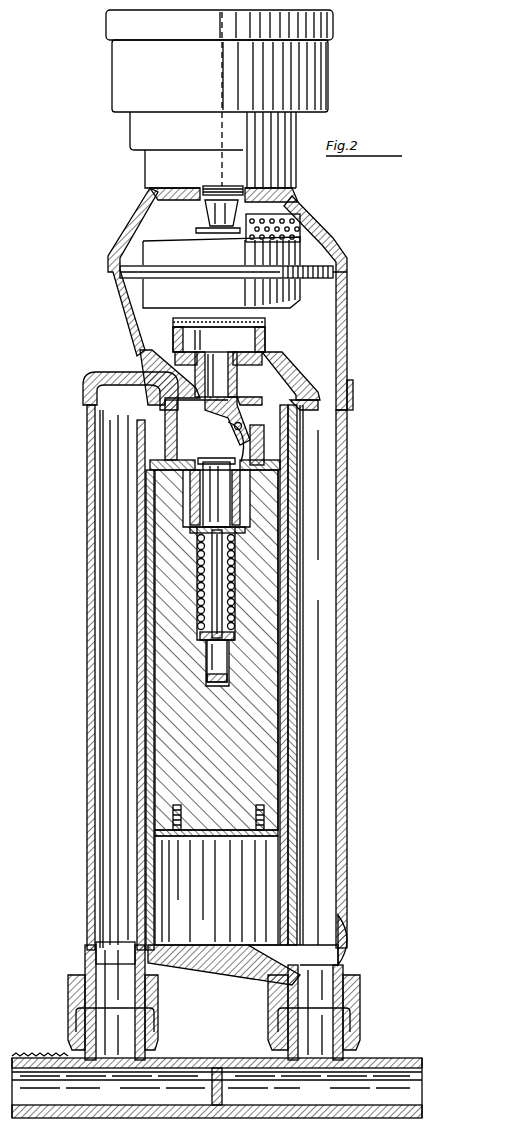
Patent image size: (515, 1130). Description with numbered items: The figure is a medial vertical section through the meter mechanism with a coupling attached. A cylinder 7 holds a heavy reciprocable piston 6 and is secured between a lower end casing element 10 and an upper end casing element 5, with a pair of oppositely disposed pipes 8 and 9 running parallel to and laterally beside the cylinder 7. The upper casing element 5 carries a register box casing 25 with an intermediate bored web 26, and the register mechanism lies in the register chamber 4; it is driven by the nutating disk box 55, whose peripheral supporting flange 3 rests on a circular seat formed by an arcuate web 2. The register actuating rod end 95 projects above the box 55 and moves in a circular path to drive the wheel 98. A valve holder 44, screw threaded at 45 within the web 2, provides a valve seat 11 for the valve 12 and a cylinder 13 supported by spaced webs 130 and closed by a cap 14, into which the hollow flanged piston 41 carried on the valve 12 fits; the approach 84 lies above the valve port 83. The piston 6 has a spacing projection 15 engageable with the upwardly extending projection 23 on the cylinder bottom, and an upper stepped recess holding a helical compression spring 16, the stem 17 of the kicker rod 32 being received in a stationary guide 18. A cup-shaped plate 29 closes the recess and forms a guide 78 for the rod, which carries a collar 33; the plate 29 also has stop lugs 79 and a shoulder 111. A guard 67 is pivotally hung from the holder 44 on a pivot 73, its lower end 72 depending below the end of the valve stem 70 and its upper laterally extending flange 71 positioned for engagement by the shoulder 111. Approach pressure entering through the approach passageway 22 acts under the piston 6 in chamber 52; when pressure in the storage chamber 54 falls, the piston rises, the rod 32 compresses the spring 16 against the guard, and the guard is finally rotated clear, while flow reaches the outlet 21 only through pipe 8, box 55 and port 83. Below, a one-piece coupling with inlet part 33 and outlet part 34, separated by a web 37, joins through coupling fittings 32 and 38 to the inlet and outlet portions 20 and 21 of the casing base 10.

The arcuate web 2 is at (308, 326).
The peripheral supporting flange 3 is at (135, 280).
The register chamber 4 is at (168, 62).
The upper end casing element 5 is at (349, 388).
The piston 6 is at (216, 650).
The cylinder 7 is at (275, 662).
The pipe 8 is at (342, 703).
The pipe 9 is at (88, 692).
The lower end casing element 10 is at (354, 962).
The valve seat 11 is at (240, 410).
The valve 12 is at (222, 395).
The cylinder 13 is at (178, 326).
The cap 14 is at (178, 322).
The spacing projection 15 is at (232, 838).
The helical compression spring 16 is at (237, 560).
The stem 17 is at (222, 606).
The stationary guide 18 is at (228, 621).
The inlet portion 20 is at (340, 991).
The outlet portion 21 is at (118, 951).
The approach passageway 22 is at (292, 956).
The upwardly extending projection 23 is at (224, 946).
The register box casing 25 is at (138, 131).
The bored web 26 is at (148, 194).
The cup-shaped plate 29 is at (219, 497).
The kicker rod 32 is at (226, 497).
The collar 33 is at (200, 531).
The outlet part 34 is at (12, 1058).
The web 37 is at (223, 1098).
The coupling fitting 38 is at (158, 1010).
The hollow flanged piston 41 is at (238, 350).
The valve holder 44 is at (255, 396).
The screw thread 45 is at (300, 375).
The chamber 52 is at (238, 880).
The storage chamber 54 is at (196, 430).
The nutating disk box 55 is at (160, 260).
The guard 67 is at (241, 446).
The valve stem 70 is at (205, 443).
The upper laterally extending flange 71 is at (247, 434).
The lower end of guard 72 is at (205, 463).
The pivot 73 is at (241, 425).
The guide 78 is at (196, 510).
The stop lugs 79 is at (278, 452).
The valve port 83 is at (225, 423).
The approach 84 is at (282, 350).
The register actuating rod end 95 is at (241, 227).
The wheel 98 is at (212, 231).
The shoulder 111 is at (275, 466).
The spaced webs 130 is at (176, 359).